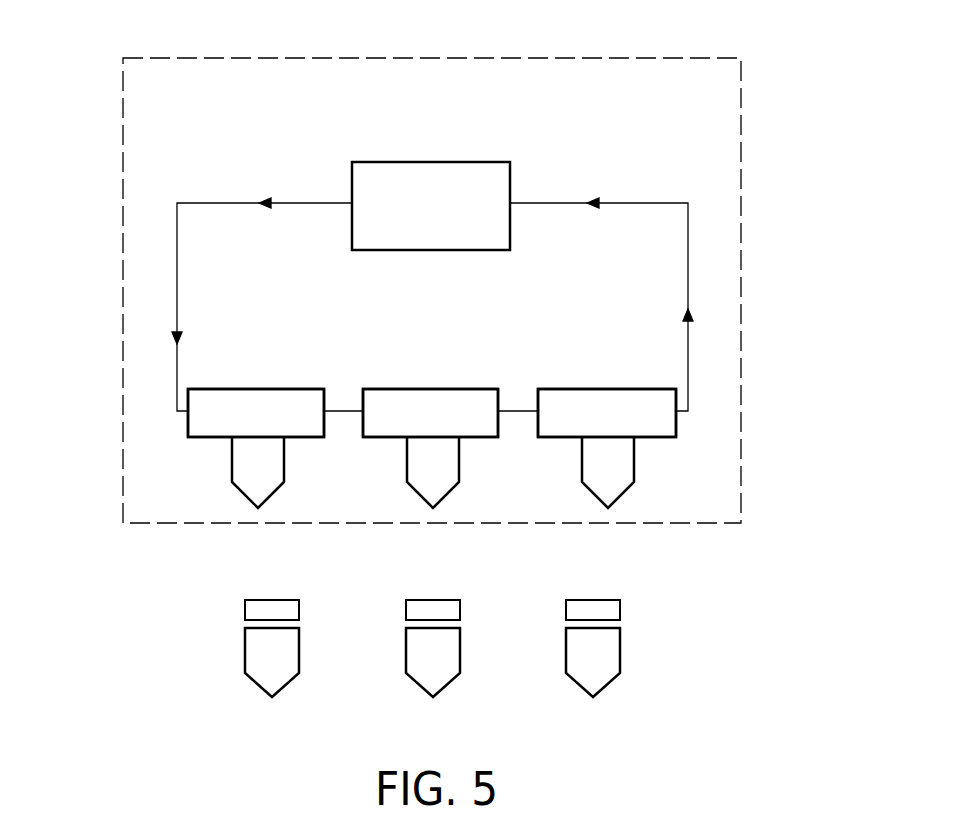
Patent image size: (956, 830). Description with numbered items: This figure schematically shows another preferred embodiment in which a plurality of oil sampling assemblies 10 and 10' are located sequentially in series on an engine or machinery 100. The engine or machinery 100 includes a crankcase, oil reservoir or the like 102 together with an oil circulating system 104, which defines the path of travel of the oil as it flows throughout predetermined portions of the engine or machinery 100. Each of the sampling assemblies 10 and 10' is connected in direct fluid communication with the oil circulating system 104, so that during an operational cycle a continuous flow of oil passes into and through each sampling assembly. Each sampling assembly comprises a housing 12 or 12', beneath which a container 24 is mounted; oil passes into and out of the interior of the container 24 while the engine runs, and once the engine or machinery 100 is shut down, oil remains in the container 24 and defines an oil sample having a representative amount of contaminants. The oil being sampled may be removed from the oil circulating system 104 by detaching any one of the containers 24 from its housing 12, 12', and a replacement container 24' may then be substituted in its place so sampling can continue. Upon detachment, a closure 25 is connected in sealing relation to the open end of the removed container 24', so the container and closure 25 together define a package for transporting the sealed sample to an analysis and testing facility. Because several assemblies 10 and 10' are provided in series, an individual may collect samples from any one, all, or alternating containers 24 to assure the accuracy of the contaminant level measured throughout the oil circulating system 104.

The engine or machinery 100 is at (754, 101).
The oil reservoir 102 is at (510, 175).
The oil circulating system 104 is at (177, 262).
The oil sampling assembly 10 is at (443, 352).
The oil sampling assembly 10' is at (432, 348).
The housing 12 is at (430, 371).
The nozzle housing (alternate) 12' is at (432, 371).
The container 24 is at (479, 473).
The replacement container 24' is at (481, 683).
The closure 25 is at (299, 610).